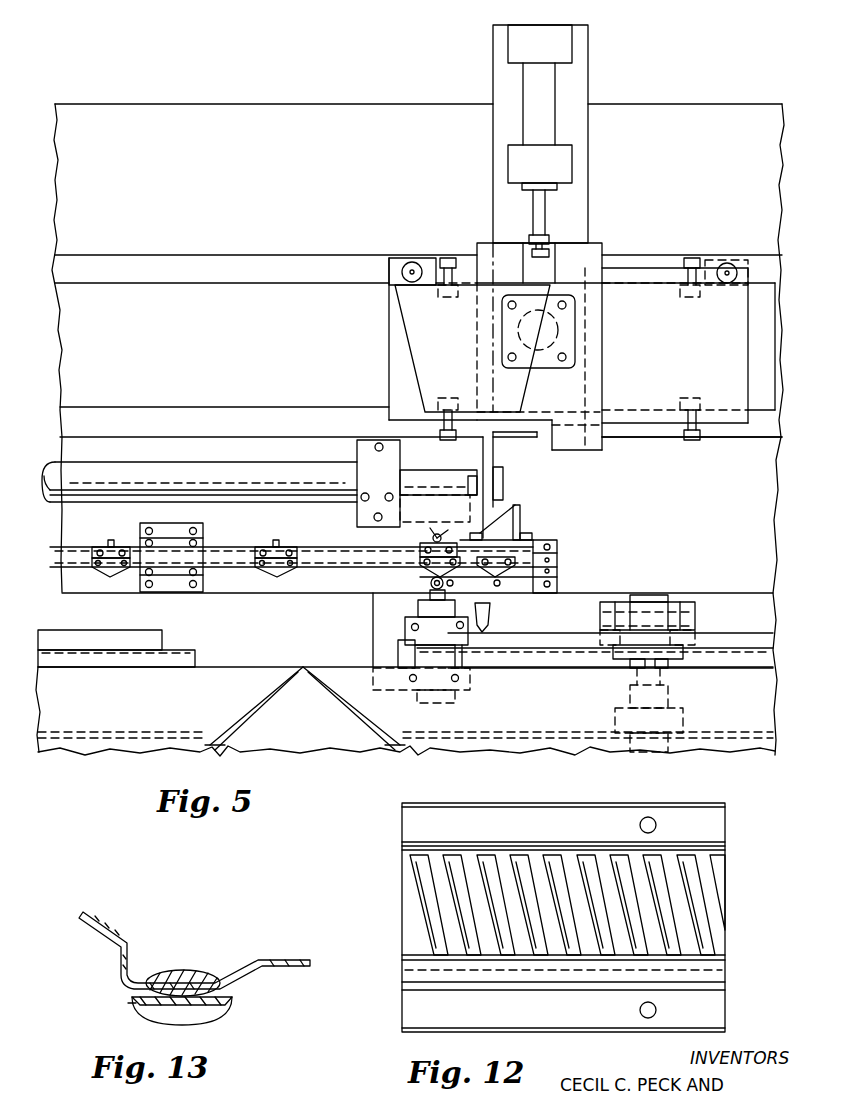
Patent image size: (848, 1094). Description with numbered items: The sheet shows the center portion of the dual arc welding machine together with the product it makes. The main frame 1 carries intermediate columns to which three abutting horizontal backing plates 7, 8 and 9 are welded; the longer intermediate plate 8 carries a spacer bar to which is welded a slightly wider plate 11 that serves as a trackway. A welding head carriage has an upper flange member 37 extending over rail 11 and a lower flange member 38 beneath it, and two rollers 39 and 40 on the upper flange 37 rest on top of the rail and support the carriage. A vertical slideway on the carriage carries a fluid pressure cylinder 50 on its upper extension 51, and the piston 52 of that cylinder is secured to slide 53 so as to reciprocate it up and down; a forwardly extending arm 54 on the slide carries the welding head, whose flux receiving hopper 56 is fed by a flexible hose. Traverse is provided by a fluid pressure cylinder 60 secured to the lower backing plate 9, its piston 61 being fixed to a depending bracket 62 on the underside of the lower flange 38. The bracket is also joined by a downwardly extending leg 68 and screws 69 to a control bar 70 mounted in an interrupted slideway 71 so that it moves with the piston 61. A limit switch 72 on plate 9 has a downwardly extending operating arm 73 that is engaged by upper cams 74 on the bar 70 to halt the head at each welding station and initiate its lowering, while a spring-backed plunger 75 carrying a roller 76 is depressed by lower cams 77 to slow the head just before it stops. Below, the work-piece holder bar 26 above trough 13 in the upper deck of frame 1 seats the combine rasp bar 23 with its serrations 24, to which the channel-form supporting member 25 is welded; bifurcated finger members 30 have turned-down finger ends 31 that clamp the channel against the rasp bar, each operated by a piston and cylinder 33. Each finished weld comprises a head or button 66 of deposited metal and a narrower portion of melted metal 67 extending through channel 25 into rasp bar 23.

In FIG. 5, the main frame 1 is at (87, 742).
In FIG. 5, the backing plate 7 is at (143, 113).
In FIG. 5, the intermediate backing plate 8 is at (62, 267).
In FIG. 5, the lower backing plate 9 is at (62, 447).
In FIG. 5, the rail 11 is at (68, 330).
In FIG. 5, the trough 13 is at (345, 695).
In FIG. 12, the combine rasp bar 23 is at (412, 945).
In FIG. 13, the combine rasp bar 23 is at (222, 1005).
In FIG. 12, the serrations 24 is at (422, 878).
In FIG. 13, the serrations 24 is at (195, 1022).
In FIG. 12, the channel-form supporting member 25 is at (402, 820).
In FIG. 13, the channel-form supporting member 25 is at (140, 916).
In FIG. 5, the work-piece holder bar 26 is at (756, 641).
In FIG. 5, the bifurcated finger member 30 is at (668, 610).
In FIG. 5, the finger ends 31 is at (606, 628).
In FIG. 5, the cylinder 33 is at (682, 722).
In FIG. 5, the upper flange member 37 is at (640, 268).
In FIG. 5, the lower flange member 38 is at (645, 415).
In FIG. 5, the roller 39 is at (408, 262).
In FIG. 5, the roller 40 is at (730, 264).
In FIG. 5, the fluid pressure cylinder 50 is at (547, 95).
In FIG. 5, the upper extension 51 is at (500, 84).
In FIG. 5, the piston 52 is at (545, 222).
In FIG. 5, the slide 53 is at (592, 373).
In FIG. 5, the forwardly extending arm 54 is at (555, 325).
In FIG. 5, the flux receiving hopper 56 is at (412, 329).
In FIG. 5, the fluid pressure cylinder 60 is at (45, 471).
In FIG. 5, the piston 61 is at (417, 470).
In FIG. 5, the depending bracket 62 is at (500, 455).
In FIG. 13, the head or button 66 is at (194, 972).
In FIG. 13, the melted metal portion 67 is at (130, 1005).
In FIG. 5, the downwardly extending leg 68 is at (518, 515).
In FIG. 5, the screws 69 is at (500, 520).
In FIG. 5, the control bar 70 is at (322, 548).
In FIG. 5, the interrupted slideway 71 is at (205, 538).
In FIG. 5, the limit switch 72 is at (452, 480).
In FIG. 5, the operating arm 73 is at (430, 538).
In FIG. 5, the upper cams 74 is at (112, 545).
In FIG. 5, the spring-backed plunger 75 is at (428, 597).
In FIG. 5, the roller 76 is at (430, 583).
In FIG. 5, the lower cams 77 is at (118, 570).